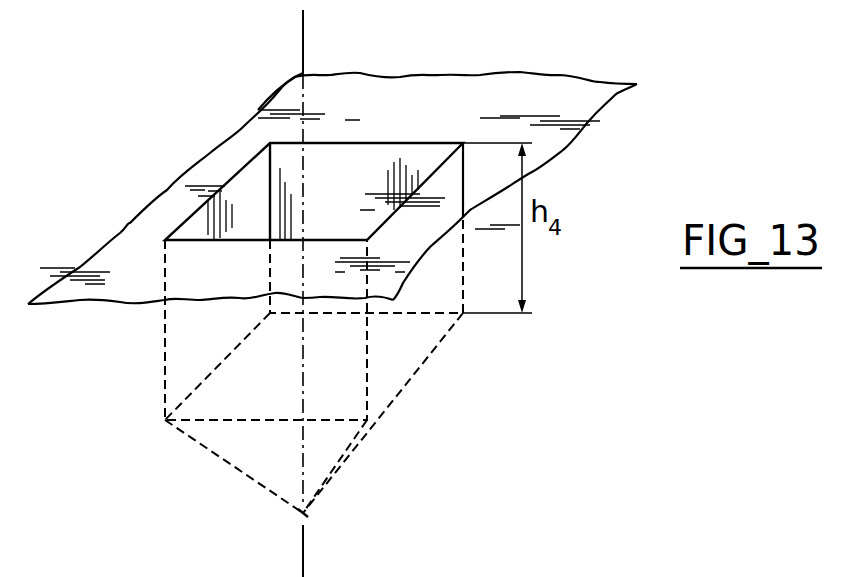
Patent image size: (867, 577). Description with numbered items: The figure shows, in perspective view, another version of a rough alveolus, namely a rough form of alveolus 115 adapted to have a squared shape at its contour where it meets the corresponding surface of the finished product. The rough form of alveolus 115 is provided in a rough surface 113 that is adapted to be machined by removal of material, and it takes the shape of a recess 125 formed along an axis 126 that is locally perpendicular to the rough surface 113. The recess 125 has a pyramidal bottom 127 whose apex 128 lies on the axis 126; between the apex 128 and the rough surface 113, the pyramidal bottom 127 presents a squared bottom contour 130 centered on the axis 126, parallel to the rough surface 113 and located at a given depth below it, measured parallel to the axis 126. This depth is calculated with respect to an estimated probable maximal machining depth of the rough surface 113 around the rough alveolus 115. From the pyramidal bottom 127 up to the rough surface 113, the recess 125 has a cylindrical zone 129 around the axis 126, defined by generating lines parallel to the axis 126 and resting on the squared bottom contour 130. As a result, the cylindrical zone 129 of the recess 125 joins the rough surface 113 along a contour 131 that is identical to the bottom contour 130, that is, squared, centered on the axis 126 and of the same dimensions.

The rough surface 113 is at (230, 157).
The rough form of alveolus 115 is at (420, 167).
The recess 125 is at (312, 180).
The axis 126 is at (300, 50).
The pyramidal bottom 127 is at (258, 462).
The apex 128 is at (305, 515).
The cylindrical zone 129 is at (243, 207).
The squared bottom contour 130 is at (408, 375).
The contour 131 is at (180, 222).